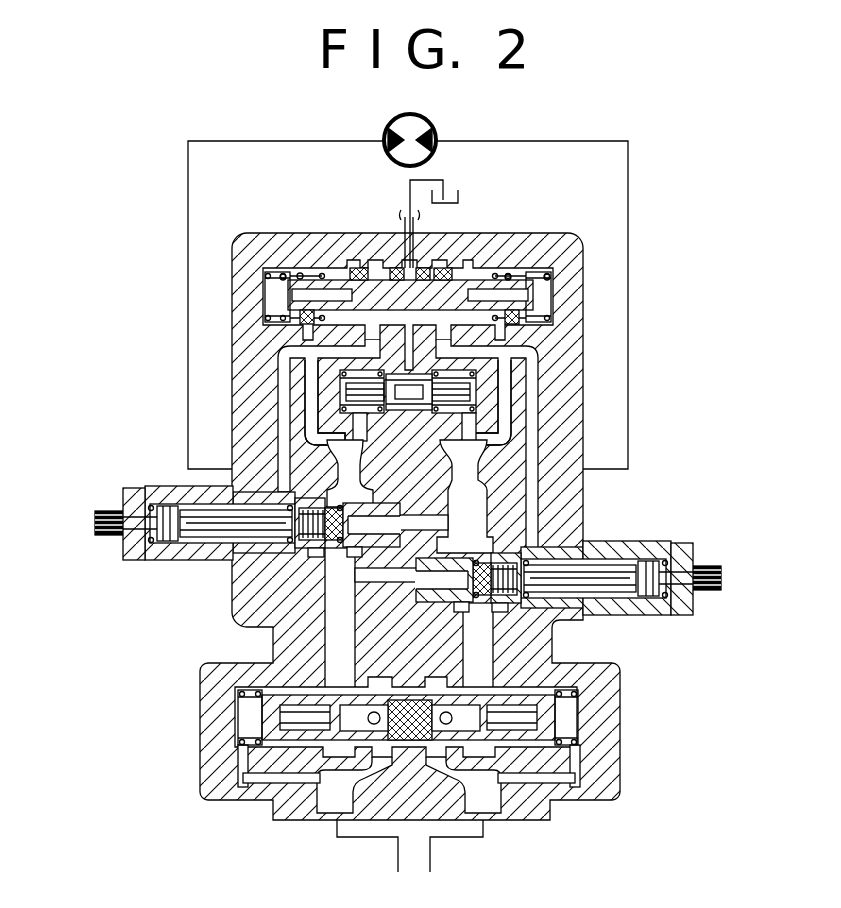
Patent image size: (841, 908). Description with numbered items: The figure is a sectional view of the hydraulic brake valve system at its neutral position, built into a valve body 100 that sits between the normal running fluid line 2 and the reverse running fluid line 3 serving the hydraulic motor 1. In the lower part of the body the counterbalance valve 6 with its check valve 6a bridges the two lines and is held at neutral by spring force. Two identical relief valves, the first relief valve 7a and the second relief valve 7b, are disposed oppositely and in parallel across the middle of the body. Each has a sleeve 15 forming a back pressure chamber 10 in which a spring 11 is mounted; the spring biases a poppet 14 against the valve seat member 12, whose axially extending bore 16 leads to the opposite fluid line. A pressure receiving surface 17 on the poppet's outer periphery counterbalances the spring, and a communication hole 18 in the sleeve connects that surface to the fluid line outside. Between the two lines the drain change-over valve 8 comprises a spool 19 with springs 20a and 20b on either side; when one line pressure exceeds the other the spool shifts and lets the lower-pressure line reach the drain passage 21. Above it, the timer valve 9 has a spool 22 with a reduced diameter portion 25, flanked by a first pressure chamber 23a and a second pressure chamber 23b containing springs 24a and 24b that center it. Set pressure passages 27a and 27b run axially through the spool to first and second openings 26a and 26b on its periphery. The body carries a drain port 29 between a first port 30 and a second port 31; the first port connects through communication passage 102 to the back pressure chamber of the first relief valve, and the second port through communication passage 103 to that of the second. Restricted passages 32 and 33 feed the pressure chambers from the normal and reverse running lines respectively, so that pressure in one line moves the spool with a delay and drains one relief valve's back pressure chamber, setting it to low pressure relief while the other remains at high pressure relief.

The hydraulic motor 1 is at (393, 134).
The normal running fluid line 2 is at (460, 535).
The reverse running fluid line 3 is at (335, 614).
The counterbalance valve 6 is at (404, 745).
The check valve 6a is at (470, 688).
The first relief valve 7a is at (665, 635).
The second relief valve 7b is at (368, 543).
The drain change-over valve 8 is at (405, 475).
The timer valve 9 is at (467, 262).
The back pressure chamber 10 is at (243, 493).
The spring 11 is at (200, 561).
The valve seat member 12 is at (392, 504).
The poppet 14 is at (306, 499).
The sleeve 15 is at (195, 486).
The axially extending bore 16 is at (395, 538).
The pressure receiving surface 17 is at (355, 556).
The communication hole 18 is at (318, 549).
The spool 19 is at (410, 376).
The spring 20a is at (468, 418).
The spring 20b is at (360, 415).
The drain passage 21 is at (407, 245).
The spool 22 is at (360, 268).
The first pressure chamber 23a is at (507, 272).
The second pressure chamber 23b is at (300, 272).
The spring 24a is at (552, 272).
The spring 24b is at (285, 272).
The reduced diameter portion 25 is at (408, 297).
The first opening 26a is at (483, 330).
The second opening 26b is at (330, 330).
The set pressure passage 27a is at (517, 297).
The set pressure passage 27b is at (310, 296).
The drain port 29 is at (436, 257).
The first port 30 is at (422, 262).
The second port 31 is at (397, 262).
The restricted passage 32 is at (512, 402).
The restricted passage 33 is at (292, 407).
The valve body 100 is at (232, 347).
The communication passage 102 is at (538, 393).
The communication passage 103 is at (278, 408).